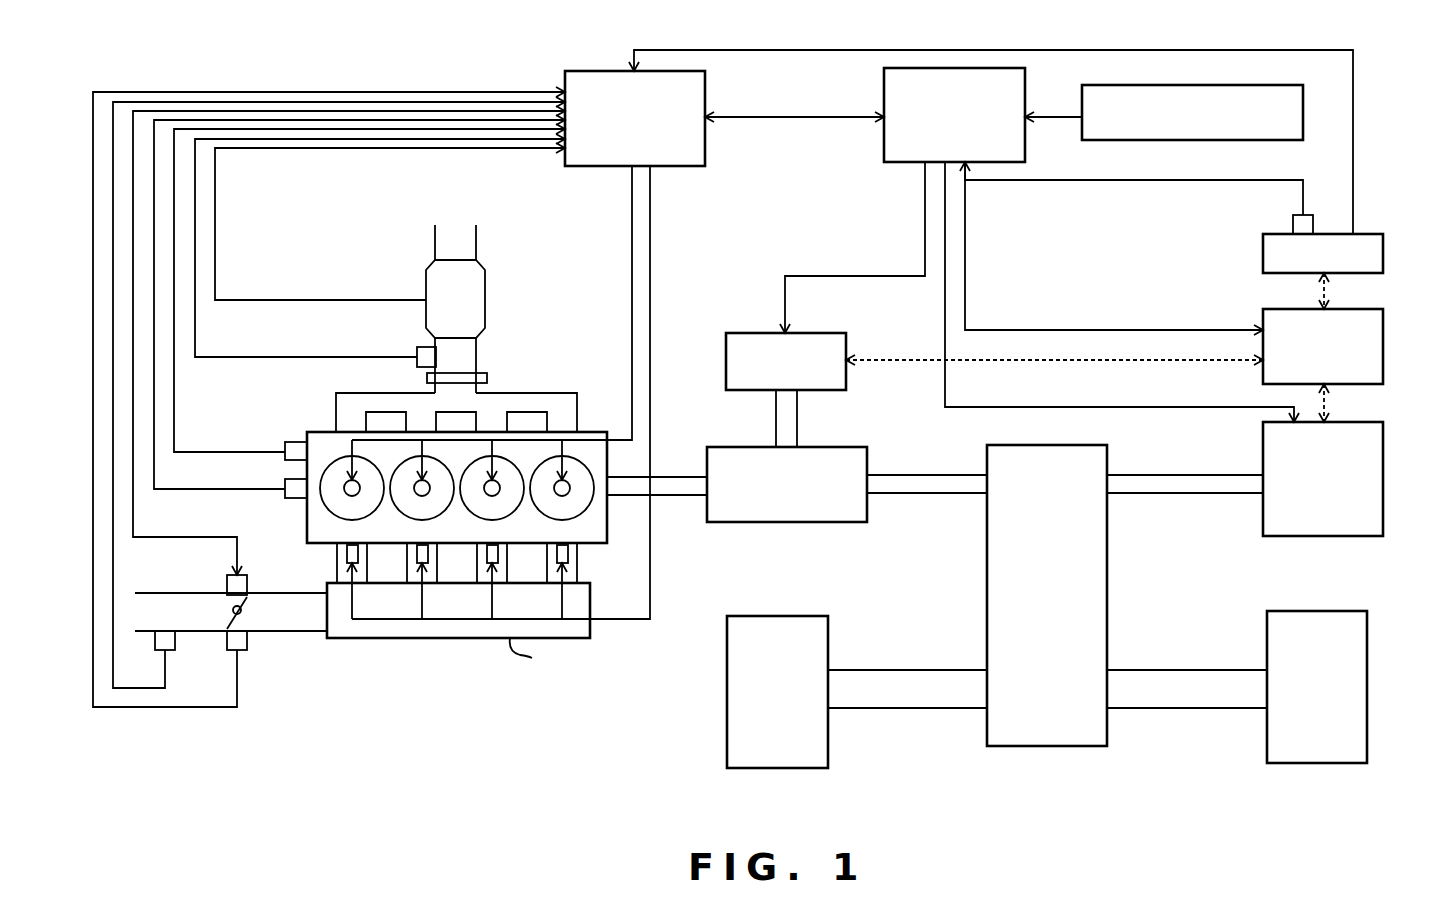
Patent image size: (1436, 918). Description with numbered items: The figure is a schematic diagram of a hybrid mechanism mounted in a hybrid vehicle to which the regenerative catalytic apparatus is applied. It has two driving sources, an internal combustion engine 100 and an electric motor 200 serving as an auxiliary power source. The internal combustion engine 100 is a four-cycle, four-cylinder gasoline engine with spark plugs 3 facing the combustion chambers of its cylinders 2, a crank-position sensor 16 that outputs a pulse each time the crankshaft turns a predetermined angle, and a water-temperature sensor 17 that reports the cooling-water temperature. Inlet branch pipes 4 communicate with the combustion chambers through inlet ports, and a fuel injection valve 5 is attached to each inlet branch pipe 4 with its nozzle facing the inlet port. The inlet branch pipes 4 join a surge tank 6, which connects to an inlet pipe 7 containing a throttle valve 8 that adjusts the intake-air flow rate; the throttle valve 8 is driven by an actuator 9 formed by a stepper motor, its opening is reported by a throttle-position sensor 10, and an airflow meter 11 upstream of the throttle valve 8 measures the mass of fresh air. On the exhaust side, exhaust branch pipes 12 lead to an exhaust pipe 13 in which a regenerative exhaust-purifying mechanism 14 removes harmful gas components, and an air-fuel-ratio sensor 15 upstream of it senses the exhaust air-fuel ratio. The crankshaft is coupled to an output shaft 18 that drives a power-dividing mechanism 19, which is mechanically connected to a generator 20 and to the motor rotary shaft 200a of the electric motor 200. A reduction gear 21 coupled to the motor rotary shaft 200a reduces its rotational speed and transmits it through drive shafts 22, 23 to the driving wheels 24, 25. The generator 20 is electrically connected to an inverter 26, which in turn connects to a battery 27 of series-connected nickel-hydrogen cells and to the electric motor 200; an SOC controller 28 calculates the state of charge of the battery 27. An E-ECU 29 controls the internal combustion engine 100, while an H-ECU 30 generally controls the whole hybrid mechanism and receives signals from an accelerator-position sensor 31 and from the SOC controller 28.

The cylinder 2 is at (544, 506).
The spark plug 3 is at (412, 503).
The inlet branch pipe 4 is at (578, 563).
The fuel injection valve 5 is at (347, 553).
The surge tank 6 is at (528, 653).
The inlet pipe 7 is at (165, 592).
The throttle valve 8 is at (233, 608).
The actuator 9 is at (247, 578).
The throttle-position sensor 10 is at (247, 640).
The airflow meter 11 is at (175, 640).
The exhaust branch pipe 12 is at (530, 400).
The exhaust pipe 13 is at (476, 240).
The regenerative exhaust-purifying mechanism 14 is at (485, 300).
The air-fuel-ratio sensor 15 is at (420, 348).
The crank-position sensor 16 is at (293, 496).
The water-temperature sensor 17 is at (292, 444).
The output shaft 18 is at (677, 477).
The power-dividing mechanism 19 is at (760, 522).
The generator 20 is at (748, 333).
The reduction gear 21 is at (1107, 582).
The drive shaft 22 is at (921, 708).
The drive shaft 23 is at (1178, 708).
The wheel 24 is at (800, 768).
The wheel 25 is at (1320, 763).
The inverter 26 is at (1383, 345).
The battery 27 is at (1383, 250).
The SOC controller 28 is at (1296, 223).
The electronic control unit (E-ECU) 29 is at (705, 85).
The electronic control unit (H-ECU) 30 is at (1025, 88).
The accelerator-position sensor 31 is at (1275, 85).
The internal combustion engine 100 is at (442, 465).
The electric motor 200 is at (1323, 536).
The motor rotary shaft 200a is at (905, 475).